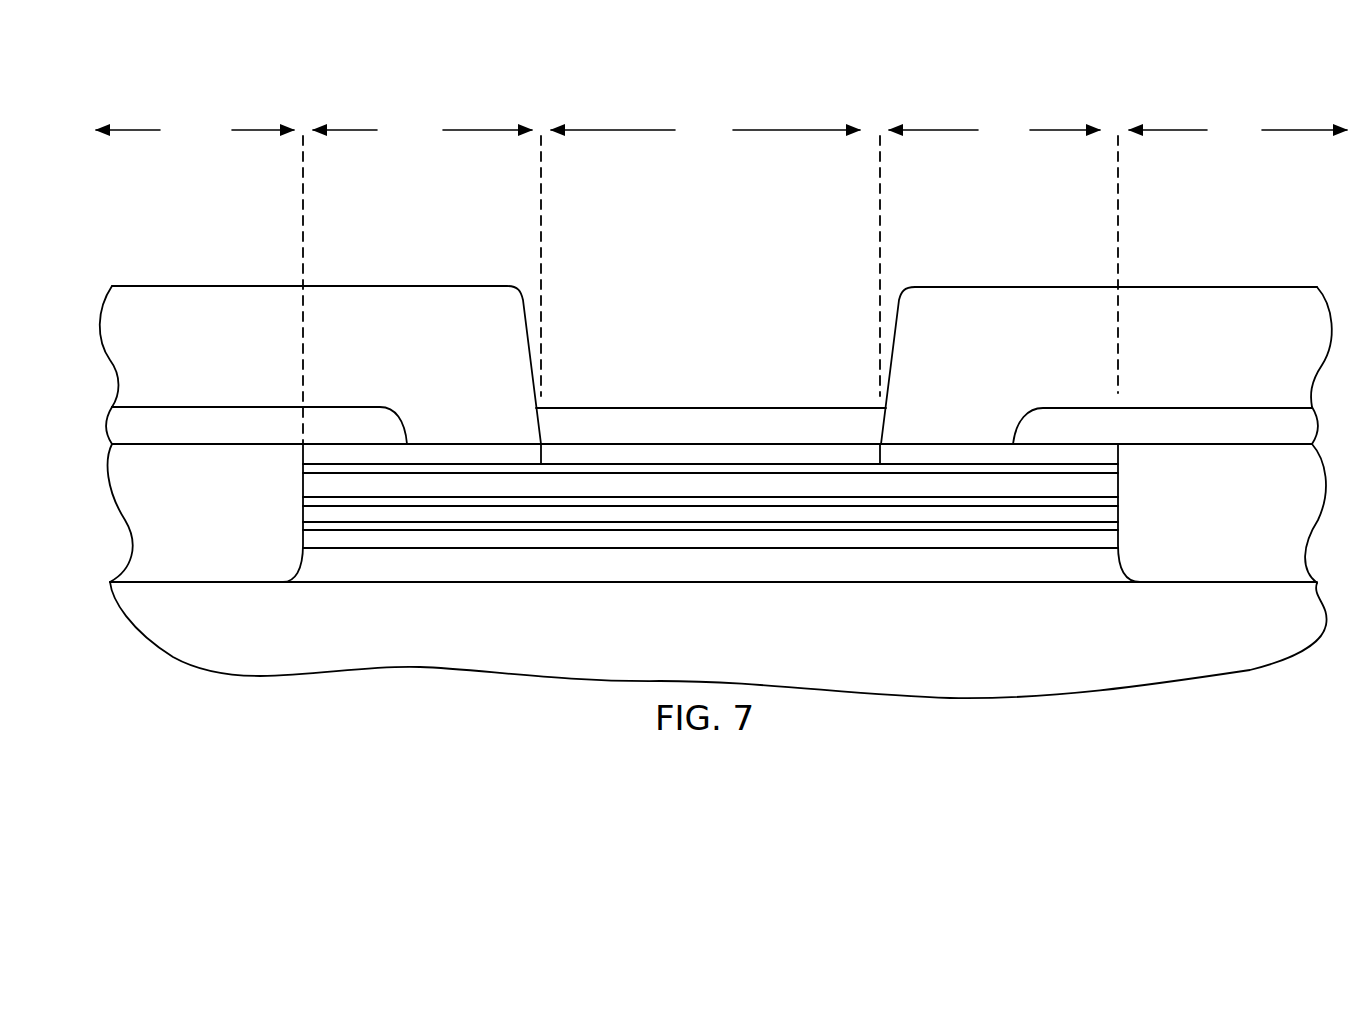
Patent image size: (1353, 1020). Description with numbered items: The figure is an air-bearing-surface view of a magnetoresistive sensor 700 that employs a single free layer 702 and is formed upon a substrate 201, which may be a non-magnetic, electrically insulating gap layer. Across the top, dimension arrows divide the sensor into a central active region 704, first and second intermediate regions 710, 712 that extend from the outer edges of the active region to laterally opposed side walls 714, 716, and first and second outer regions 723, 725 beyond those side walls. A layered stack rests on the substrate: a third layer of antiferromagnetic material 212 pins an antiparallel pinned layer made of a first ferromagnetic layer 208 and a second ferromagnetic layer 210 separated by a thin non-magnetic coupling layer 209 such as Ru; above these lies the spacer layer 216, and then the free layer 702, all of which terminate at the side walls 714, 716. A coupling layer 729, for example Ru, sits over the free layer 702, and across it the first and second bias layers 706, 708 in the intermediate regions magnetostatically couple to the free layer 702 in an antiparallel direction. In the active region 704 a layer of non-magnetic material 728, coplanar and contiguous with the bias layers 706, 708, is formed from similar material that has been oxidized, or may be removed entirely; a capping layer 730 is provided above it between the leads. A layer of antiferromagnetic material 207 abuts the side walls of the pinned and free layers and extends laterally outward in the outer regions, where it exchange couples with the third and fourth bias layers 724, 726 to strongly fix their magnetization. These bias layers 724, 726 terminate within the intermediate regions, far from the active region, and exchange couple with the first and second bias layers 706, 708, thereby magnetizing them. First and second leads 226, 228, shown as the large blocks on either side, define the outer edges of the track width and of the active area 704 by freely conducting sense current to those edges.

The sensor 700 is at (1010, 742).
The second outer region 725 is at (199, 280).
The second intermediate region 712 is at (426, 256).
The active region 704 is at (715, 256).
The first intermediate region 710 is at (1003, 255).
The first outer region 723 is at (1238, 130).
The first lead 226 is at (407, 324).
The second lead 228 is at (1158, 335).
The third bias layer 724 is at (155, 424).
The fourth bias layer 726 is at (1153, 424).
The capping layer 730 is at (779, 450).
The layer of non-magnetic material 728 is at (643, 457).
The second bias layer 708 is at (443, 457).
The first bias layer 706 is at (948, 454).
The second side wall 716 is at (297, 438).
The first side wall 714 is at (1128, 446).
The coupling layer 729 is at (1119, 470).
The free layer 702 is at (1116, 487).
The spacer layer 216 is at (305, 497).
The second ferromagnetic layer 210 is at (312, 508).
The coupling layer 209 is at (308, 522).
The first ferromagnetic layer 208 is at (308, 537).
The third layer of antiferromagnetic material 212 is at (315, 564).
The second layer of antiferromagnetic material 207 is at (150, 498).
The substrate 201 is at (546, 636).